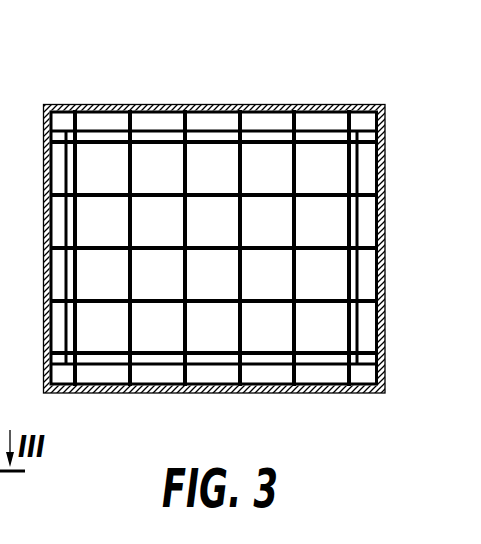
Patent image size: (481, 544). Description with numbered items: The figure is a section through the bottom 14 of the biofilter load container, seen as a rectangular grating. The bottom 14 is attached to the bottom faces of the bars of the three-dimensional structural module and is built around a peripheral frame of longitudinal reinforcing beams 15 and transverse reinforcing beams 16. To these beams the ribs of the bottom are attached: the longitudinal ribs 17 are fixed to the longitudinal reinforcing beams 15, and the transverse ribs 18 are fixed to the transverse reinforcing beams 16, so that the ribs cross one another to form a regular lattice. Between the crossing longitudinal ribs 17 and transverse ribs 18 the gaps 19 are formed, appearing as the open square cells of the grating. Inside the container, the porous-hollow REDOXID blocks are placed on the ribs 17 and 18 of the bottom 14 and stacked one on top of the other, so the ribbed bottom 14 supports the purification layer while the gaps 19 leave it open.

The bottom 14 is at (108, 358).
The longitudinal reinforcing beams 15 is at (273, 377).
The transverse reinforcing beams 16 is at (367, 238).
The longitudinal ribs 17 is at (213, 193).
The transverse ribs 18 is at (182, 340).
The gaps 19 is at (93, 270).